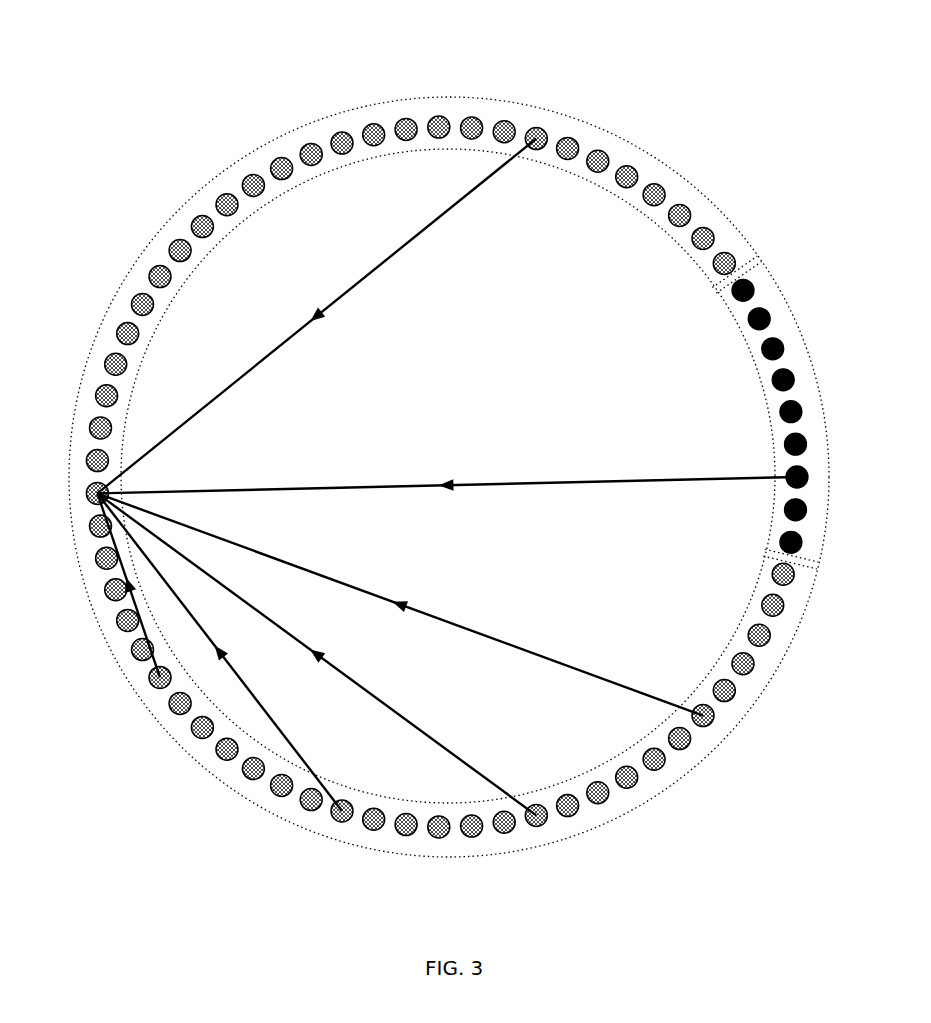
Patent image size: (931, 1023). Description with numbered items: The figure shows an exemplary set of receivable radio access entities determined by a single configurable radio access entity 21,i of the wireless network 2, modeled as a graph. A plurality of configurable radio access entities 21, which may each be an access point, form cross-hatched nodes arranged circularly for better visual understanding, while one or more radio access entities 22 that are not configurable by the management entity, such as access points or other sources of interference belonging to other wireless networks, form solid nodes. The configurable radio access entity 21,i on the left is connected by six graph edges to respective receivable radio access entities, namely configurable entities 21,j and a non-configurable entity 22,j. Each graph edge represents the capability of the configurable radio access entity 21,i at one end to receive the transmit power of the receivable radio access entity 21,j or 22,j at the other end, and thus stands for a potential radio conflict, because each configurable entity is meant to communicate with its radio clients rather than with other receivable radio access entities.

The wireless network 2 is at (453, 37).
The configurable radio access entities 21 is at (603, 128).
The configurable radio access entity 21,i is at (86, 483).
The receivable radio access entity 21,j is at (541, 126).
The radio access entities not configurable by the management entity 22 is at (823, 389).
The radio access entity of another wireless network 22,j is at (807, 504).